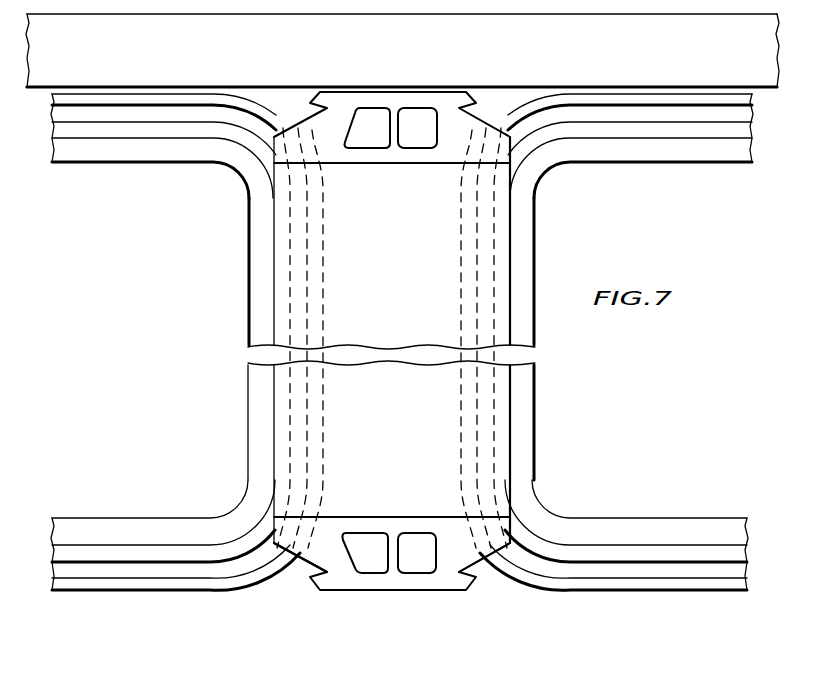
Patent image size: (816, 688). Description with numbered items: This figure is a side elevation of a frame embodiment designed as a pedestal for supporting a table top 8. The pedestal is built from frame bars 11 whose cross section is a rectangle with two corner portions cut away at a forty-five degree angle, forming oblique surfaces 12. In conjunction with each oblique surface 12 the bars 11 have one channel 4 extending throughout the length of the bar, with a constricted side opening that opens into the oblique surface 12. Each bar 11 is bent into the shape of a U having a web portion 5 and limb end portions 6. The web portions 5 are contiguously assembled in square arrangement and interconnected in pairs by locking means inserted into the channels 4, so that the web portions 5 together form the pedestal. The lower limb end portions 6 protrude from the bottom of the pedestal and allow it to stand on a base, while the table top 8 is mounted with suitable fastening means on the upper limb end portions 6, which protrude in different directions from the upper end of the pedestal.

The table top 8 is at (773, 74).
The limb end portions 6 is at (683, 163).
The web portion 5 is at (537, 250).
The frame bars 11 is at (537, 427).
The channel 4 is at (303, 563).
The oblique surfaces 12 is at (480, 569).